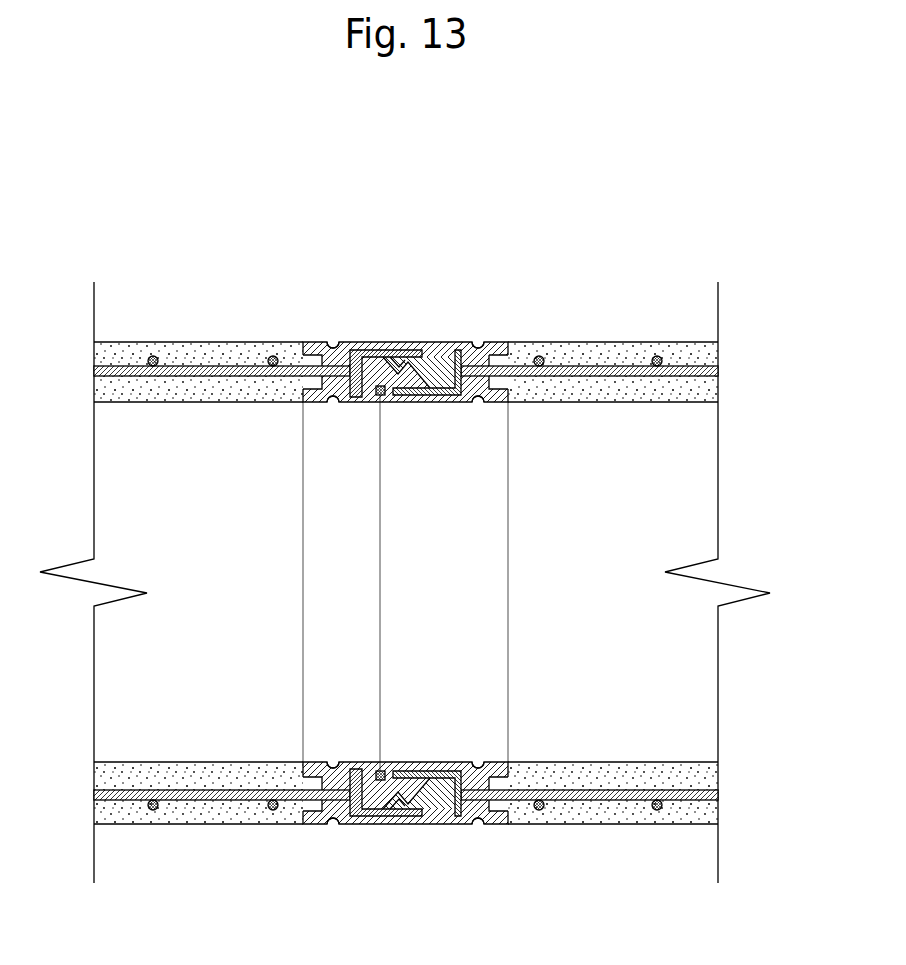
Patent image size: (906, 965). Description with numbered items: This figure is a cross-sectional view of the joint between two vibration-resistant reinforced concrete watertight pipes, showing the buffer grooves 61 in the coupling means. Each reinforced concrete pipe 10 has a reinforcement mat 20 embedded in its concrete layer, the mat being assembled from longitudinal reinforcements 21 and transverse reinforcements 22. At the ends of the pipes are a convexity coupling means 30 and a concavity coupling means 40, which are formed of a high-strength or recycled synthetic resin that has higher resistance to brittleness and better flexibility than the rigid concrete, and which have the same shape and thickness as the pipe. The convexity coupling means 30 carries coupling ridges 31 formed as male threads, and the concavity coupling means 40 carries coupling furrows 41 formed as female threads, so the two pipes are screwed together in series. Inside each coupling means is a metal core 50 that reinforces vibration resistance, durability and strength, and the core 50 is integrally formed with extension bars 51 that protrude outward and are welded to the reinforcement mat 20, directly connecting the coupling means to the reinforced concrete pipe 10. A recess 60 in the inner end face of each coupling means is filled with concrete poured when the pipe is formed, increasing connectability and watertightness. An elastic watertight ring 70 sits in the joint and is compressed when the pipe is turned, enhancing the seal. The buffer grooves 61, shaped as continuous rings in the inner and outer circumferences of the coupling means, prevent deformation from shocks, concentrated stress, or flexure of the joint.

The reinforced concrete pipe 10 is at (185, 395).
The reinforcement mat 20 is at (158, 197).
The longitudinal reinforcements 21 is at (107, 365).
The transverse reinforcements 22 is at (273, 356).
The convexity coupling means 30 is at (463, 324).
The coupling ridges 31 is at (410, 396).
The concavity coupling means 40 is at (349, 324).
The coupling furrows 41 is at (398, 370).
The metal core 50 is at (380, 352).
The extension bars 51 is at (290, 378).
The recess 60 is at (318, 362).
The buffer grooves 61 is at (333, 342).
The watertight ring 70 is at (380, 392).